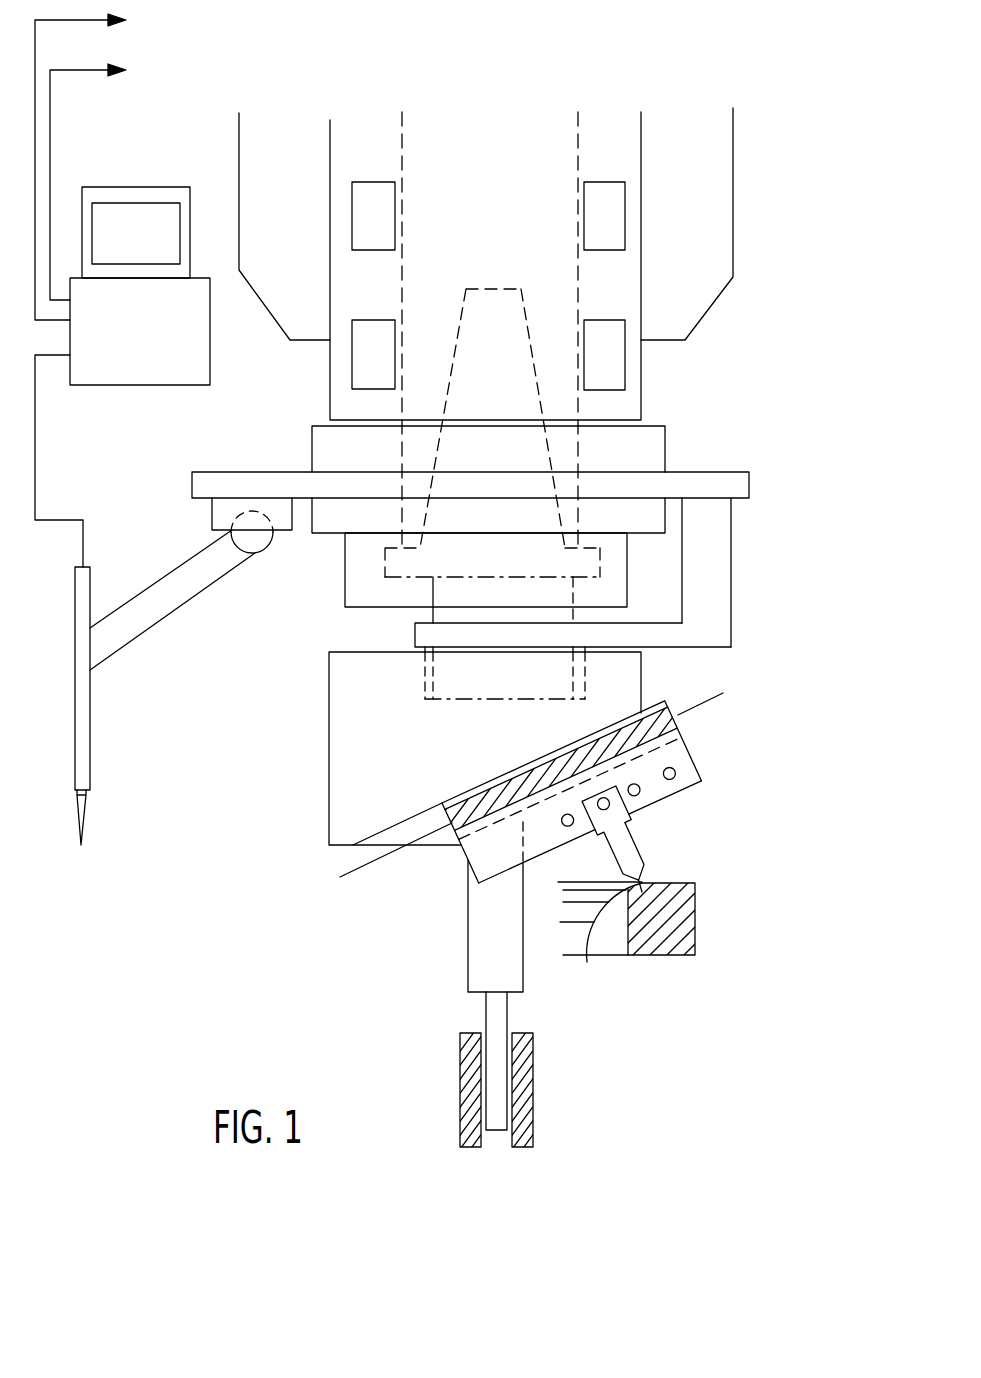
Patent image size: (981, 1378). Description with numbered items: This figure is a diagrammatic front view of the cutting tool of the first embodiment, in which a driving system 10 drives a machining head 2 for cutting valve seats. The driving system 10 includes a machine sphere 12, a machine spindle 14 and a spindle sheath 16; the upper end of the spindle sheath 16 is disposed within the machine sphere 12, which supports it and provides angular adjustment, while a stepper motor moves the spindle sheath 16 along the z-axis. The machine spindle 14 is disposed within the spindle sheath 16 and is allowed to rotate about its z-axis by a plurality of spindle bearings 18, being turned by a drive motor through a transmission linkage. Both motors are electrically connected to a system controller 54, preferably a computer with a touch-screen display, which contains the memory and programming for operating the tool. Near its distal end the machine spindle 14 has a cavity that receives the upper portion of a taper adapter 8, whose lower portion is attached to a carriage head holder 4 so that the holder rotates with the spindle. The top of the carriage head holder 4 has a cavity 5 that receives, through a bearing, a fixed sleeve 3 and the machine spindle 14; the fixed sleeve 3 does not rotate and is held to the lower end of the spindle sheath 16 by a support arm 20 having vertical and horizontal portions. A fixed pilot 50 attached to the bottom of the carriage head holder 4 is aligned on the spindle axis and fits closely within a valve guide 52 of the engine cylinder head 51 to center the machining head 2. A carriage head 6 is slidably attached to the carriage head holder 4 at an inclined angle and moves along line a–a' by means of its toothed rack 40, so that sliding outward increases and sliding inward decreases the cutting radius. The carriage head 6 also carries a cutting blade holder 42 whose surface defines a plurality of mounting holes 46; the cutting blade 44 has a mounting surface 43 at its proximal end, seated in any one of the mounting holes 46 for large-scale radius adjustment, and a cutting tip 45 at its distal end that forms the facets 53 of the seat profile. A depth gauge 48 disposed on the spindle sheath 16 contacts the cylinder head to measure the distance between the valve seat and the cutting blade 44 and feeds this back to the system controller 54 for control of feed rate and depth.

The machining head 2 is at (576, 689).
The fixed sleeve 3 is at (590, 647).
The carriage head holder 4 is at (634, 680).
The cavity 5 is at (423, 677).
The carriage head 6 is at (577, 788).
The taper adapter 8 is at (528, 548).
The driving system 10 is at (515, 342).
The machine sphere 12 is at (245, 163).
The machine spindle 14 is at (560, 408).
The spindle sheath 16 is at (630, 290).
The spindle bearings 18 is at (585, 322).
The support arm 20 is at (718, 520).
The toothed rack 40 is at (657, 738).
The cutting blade holder 42 is at (680, 758).
The mounting surface 43 is at (617, 833).
The cutting blade 44 is at (655, 839).
The cutting tip 45 is at (643, 877).
The mounting holes 46 is at (676, 776).
The depth gauge 48 is at (90, 731).
The fixed pilot 50 is at (497, 1022).
The cylinder head 51 is at (692, 930).
The valve guide 52 is at (465, 1070).
The facets 53 is at (627, 938).
The system controller 54 is at (205, 325).